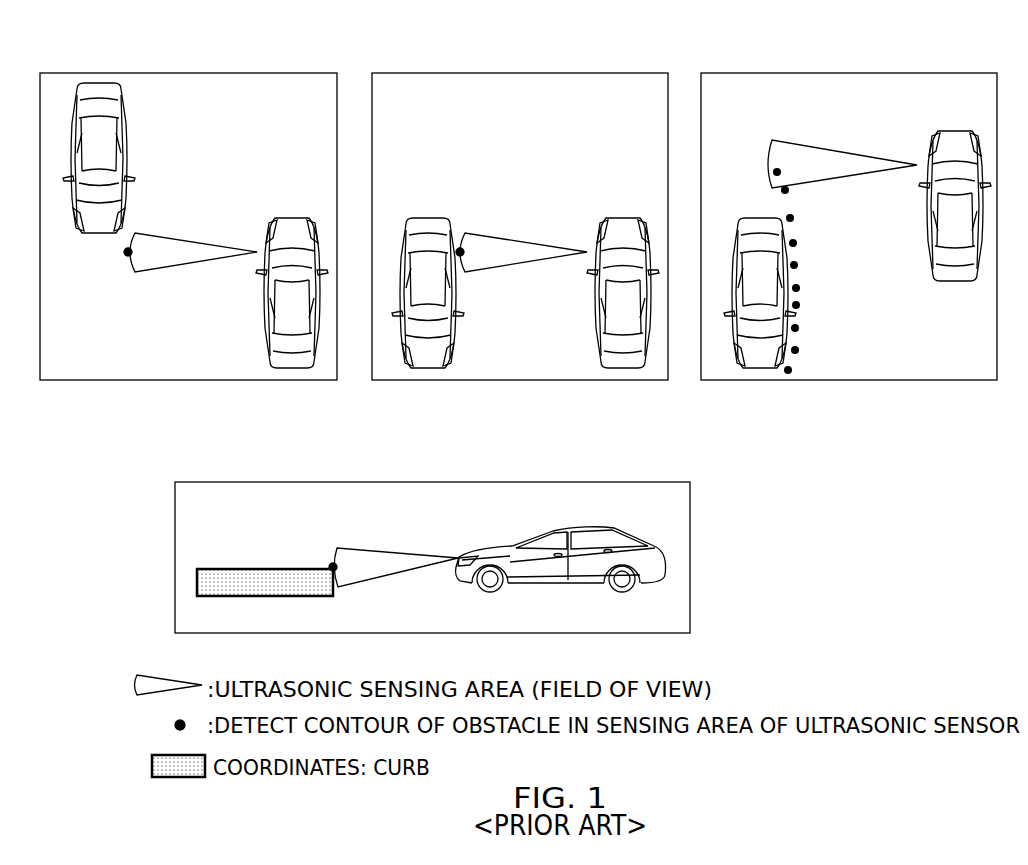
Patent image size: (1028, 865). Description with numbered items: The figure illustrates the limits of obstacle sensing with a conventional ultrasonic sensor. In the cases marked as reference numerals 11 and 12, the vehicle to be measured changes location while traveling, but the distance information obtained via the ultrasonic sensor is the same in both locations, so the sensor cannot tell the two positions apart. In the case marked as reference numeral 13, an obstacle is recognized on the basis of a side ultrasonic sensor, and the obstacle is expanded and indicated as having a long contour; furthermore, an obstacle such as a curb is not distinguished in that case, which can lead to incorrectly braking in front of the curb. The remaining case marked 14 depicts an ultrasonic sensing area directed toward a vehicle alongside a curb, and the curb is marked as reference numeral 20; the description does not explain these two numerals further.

The first sensing case 11 is at (188, 190).
The second sensing case 12 is at (520, 190).
The contour expansion case 13 is at (849, 190).
The fourth sensing scenario (curb detection) 14 is at (432, 517).
The curb 20 is at (265, 568).